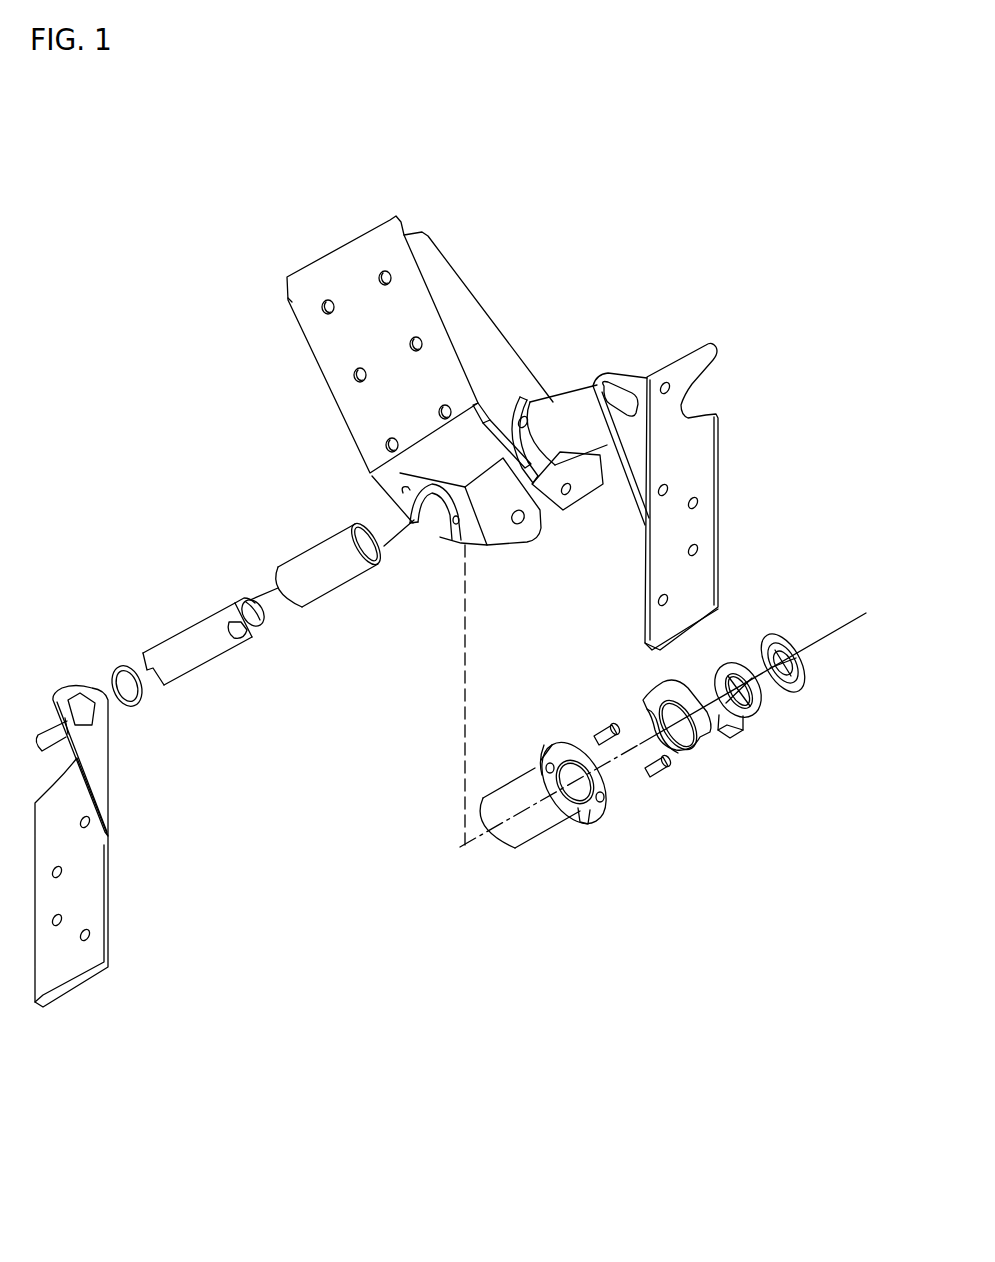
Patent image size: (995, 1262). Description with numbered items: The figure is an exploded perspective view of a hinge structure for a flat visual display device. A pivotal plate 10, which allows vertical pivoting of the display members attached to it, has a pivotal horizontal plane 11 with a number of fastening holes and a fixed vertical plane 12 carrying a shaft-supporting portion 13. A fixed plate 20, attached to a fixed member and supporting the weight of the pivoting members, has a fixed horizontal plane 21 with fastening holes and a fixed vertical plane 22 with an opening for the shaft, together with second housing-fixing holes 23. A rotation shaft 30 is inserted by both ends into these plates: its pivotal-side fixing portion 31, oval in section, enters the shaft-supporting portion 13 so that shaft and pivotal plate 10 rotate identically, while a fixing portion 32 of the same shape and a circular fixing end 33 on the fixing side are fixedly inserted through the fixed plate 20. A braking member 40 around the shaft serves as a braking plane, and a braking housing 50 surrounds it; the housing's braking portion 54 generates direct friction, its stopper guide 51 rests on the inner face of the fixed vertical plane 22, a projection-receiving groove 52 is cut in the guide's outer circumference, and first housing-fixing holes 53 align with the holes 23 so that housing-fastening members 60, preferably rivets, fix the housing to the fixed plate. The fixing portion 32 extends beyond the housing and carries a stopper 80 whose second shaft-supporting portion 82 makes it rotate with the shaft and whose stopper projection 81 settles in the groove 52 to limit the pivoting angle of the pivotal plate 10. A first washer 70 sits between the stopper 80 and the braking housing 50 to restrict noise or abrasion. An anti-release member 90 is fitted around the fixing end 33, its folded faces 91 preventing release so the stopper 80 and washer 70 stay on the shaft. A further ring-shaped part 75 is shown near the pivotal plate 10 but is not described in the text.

The pivotal plate 10 is at (90, 1010).
The pivotal horizontal plane 11 is at (80, 912).
The fixed vertical plane 12 is at (100, 786).
The shaft-supporting portion 13 is at (70, 700).
The fixed plate 20 is at (333, 248).
The fixed horizontal plane 21 is at (330, 330).
The fixed vertical plane 22 is at (412, 522).
The second housing-fixing holes 23 is at (466, 548).
The rotation shaft 30 is at (172, 623).
The fixing portion 31 is at (166, 686).
The fixing portion 32 is at (245, 637).
The fixing end 33 is at (263, 628).
The braking member 40 is at (312, 533).
The braking housing 50 is at (550, 856).
The stopper guide 51 is at (572, 768).
The projection-receiving groove 52 is at (590, 822).
The first housing-fixing holes 53 is at (545, 760).
The braking portion 54 is at (510, 834).
The housing-fastening member 60 is at (660, 786).
The first washer 70 is at (706, 750).
The washer 75 is at (136, 706).
The stopper 80 is at (766, 713).
The stopper projection 81 is at (735, 737).
The second shaft-supporting portion 82 is at (742, 672).
The anti-release member 90 is at (797, 636).
The folded faces 91 is at (795, 675).